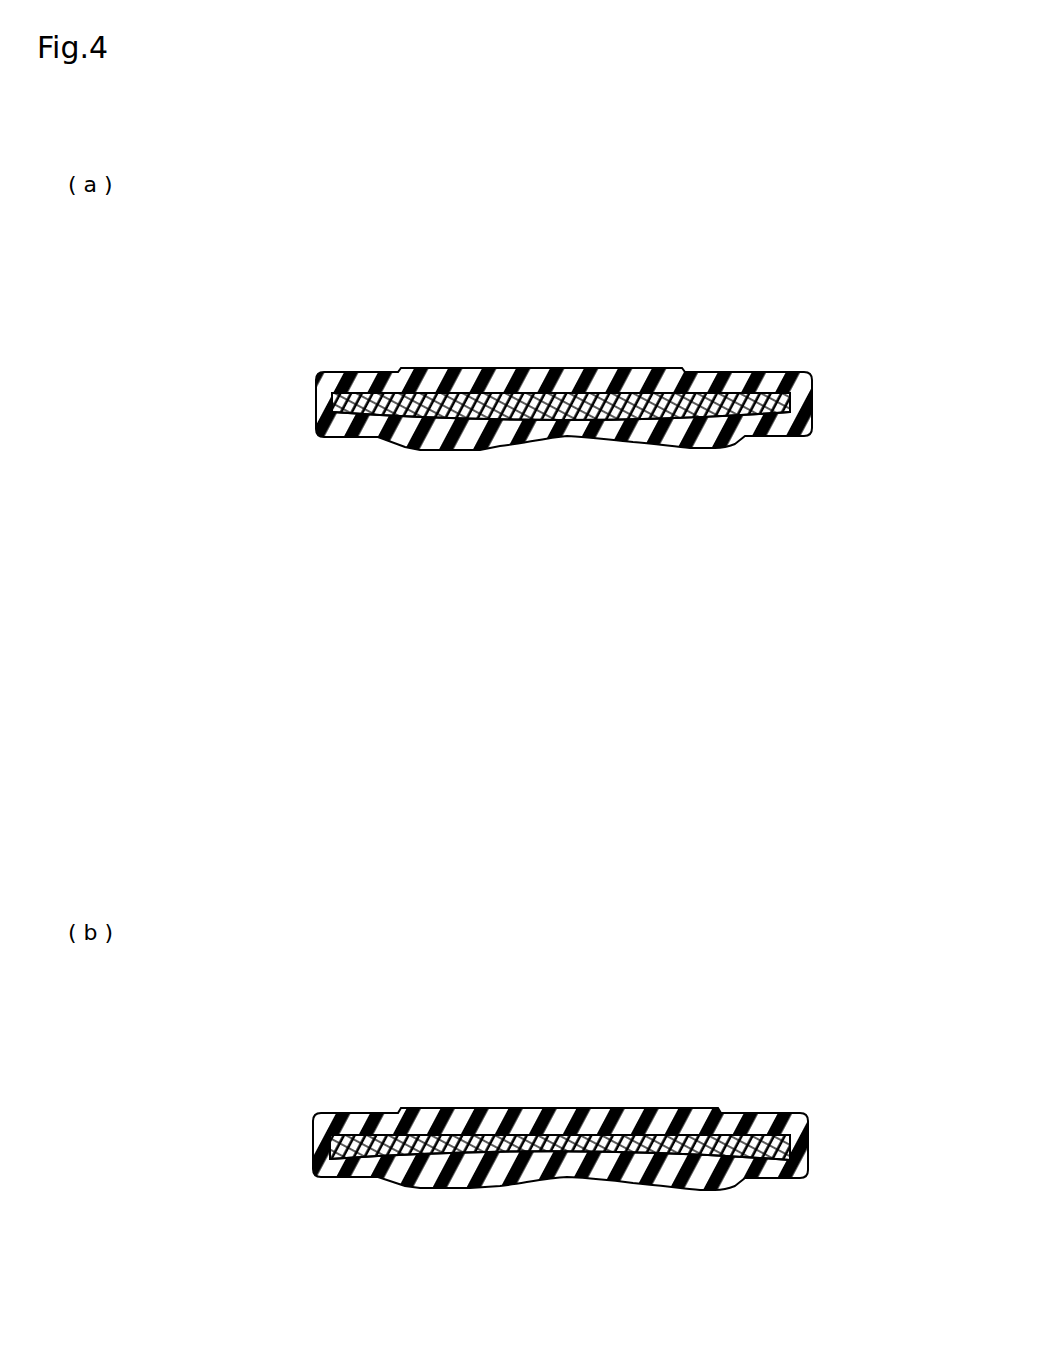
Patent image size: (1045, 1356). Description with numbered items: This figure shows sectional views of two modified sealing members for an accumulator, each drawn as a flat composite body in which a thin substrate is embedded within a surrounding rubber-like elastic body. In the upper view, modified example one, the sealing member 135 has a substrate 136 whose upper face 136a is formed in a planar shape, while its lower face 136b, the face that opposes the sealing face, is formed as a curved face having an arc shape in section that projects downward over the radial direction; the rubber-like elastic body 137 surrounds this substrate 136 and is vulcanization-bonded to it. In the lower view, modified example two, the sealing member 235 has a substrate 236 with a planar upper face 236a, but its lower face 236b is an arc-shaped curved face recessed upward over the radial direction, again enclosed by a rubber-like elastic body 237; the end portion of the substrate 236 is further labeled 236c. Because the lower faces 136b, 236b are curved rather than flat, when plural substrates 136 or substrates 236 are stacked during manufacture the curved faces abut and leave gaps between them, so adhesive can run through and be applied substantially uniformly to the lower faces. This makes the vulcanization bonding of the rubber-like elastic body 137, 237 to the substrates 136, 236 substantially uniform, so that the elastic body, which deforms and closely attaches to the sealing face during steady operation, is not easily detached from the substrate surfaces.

The sealing member 135 is at (761, 326).
The substrate 136 is at (645, 392).
The upper face 136a is at (563, 393).
The lower face 136b is at (573, 422).
The rubber-like elastic body 137 is at (607, 448).
The sealing member 235 is at (760, 1066).
The substrate 236 is at (647, 1132).
The upper face 236a is at (560, 1135).
The lower face 236b is at (563, 1175).
The end portion of plate member 236c is at (809, 1150).
The rubber-like elastic body 237 is at (604, 1196).